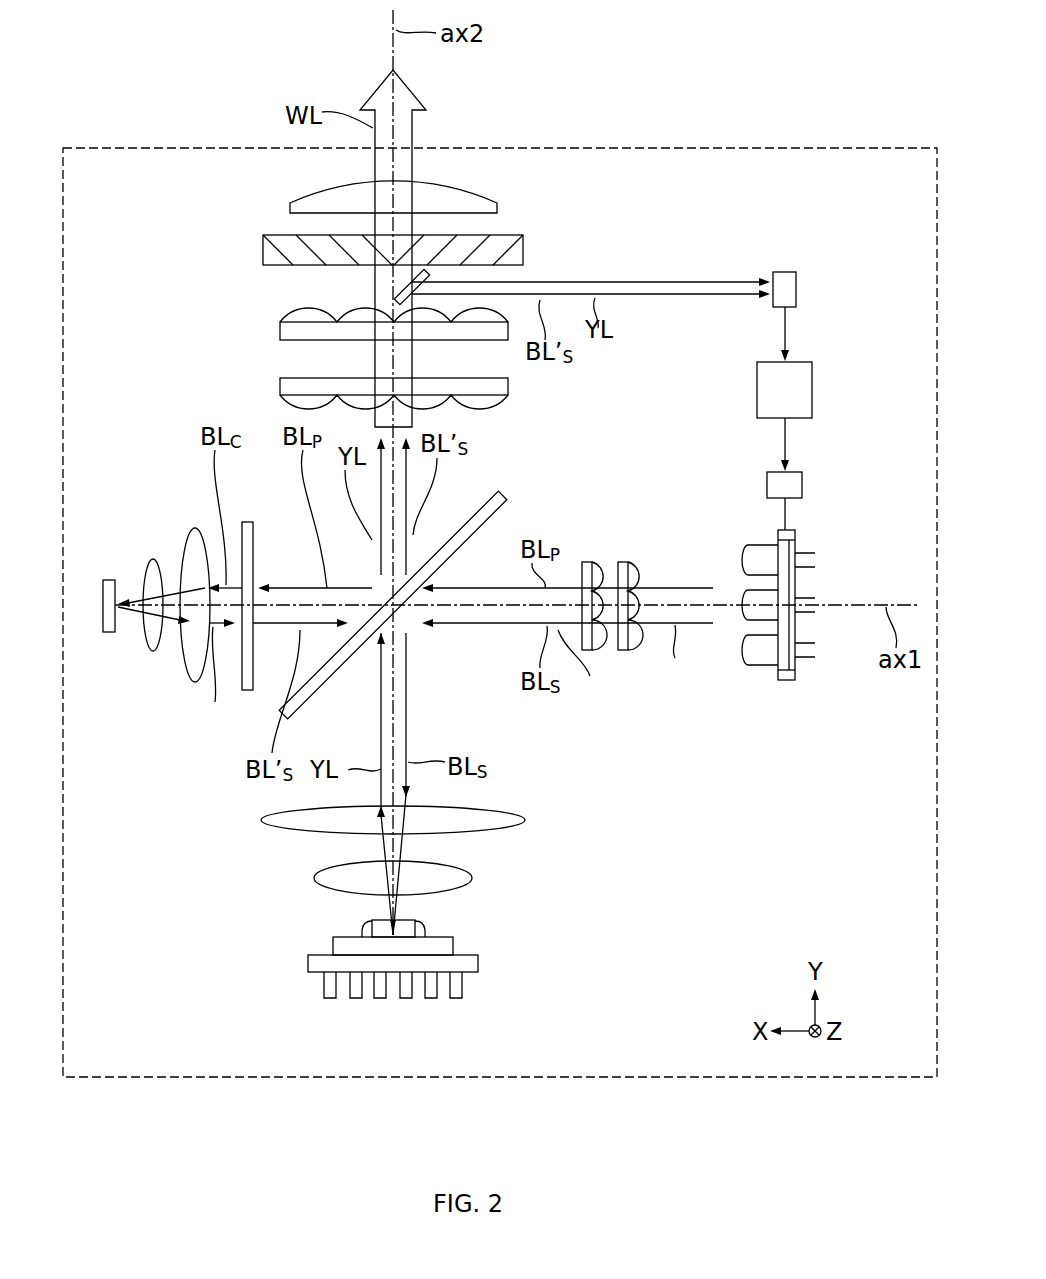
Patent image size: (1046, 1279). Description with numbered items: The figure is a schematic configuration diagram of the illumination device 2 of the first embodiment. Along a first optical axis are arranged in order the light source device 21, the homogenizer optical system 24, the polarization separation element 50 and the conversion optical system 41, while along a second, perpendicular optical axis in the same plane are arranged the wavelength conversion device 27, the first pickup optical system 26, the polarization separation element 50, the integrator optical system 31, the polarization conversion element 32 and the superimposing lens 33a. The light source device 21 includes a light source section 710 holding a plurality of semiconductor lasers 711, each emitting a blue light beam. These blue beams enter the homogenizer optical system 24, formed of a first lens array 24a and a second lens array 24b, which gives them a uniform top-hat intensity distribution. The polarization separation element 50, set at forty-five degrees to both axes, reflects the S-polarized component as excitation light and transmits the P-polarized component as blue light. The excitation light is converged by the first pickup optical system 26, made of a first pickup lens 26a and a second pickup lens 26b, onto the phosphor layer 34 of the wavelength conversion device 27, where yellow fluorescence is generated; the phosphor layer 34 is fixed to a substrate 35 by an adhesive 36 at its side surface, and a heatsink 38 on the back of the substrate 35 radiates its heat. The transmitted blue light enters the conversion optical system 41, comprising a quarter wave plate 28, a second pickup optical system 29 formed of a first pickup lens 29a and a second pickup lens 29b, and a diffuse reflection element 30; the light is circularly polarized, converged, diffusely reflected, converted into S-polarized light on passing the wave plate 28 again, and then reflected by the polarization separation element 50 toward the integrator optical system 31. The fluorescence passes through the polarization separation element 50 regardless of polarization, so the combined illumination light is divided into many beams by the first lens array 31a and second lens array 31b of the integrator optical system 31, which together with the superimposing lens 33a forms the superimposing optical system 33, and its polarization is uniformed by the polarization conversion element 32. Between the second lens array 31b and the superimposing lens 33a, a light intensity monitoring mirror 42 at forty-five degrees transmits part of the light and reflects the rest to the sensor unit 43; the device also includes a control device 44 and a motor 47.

The illumination device 2 is at (878, 147).
The light source device 21 is at (825, 722).
The homogenizer optical system 24 is at (672, 490).
The first lens array 24a is at (626, 560).
The second lens array 24b is at (585, 560).
The first pickup optical system 26 is at (633, 818).
The first pickup lens 26a is at (527, 822).
The second pickup lens 26b is at (476, 878).
The wavelength conversion device 27 is at (506, 966).
The wave plate 28 is at (248, 520).
The second pickup optical system 29 is at (191, 516).
The first pickup lens 29a is at (186, 666).
The second pickup lens 29b is at (146, 642).
The diffuse reflection element 30 is at (110, 578).
The integrator optical system 31 is at (178, 312).
The first lens array 31a is at (280, 388).
The second lens array 31b is at (280, 333).
The polarization conversion element 32 is at (525, 250).
The superimposing optical system 33 is at (228, 268).
The superimposing lens 33a is at (472, 191).
The phosphor layer 34 is at (370, 928).
The substrate 35 is at (338, 948).
The adhesive 36 is at (420, 932).
The heatsink 38 is at (310, 963).
The conversion optical system 41 is at (257, 730).
The light intensity monitoring mirror 42 is at (400, 290).
The sensor unit 43 is at (798, 290).
The control device 44 is at (814, 390).
The motor 47 is at (804, 485).
The polarization separation element 50 is at (483, 500).
The light source section 710 is at (757, 684).
The semiconductor laser 711 is at (763, 598).